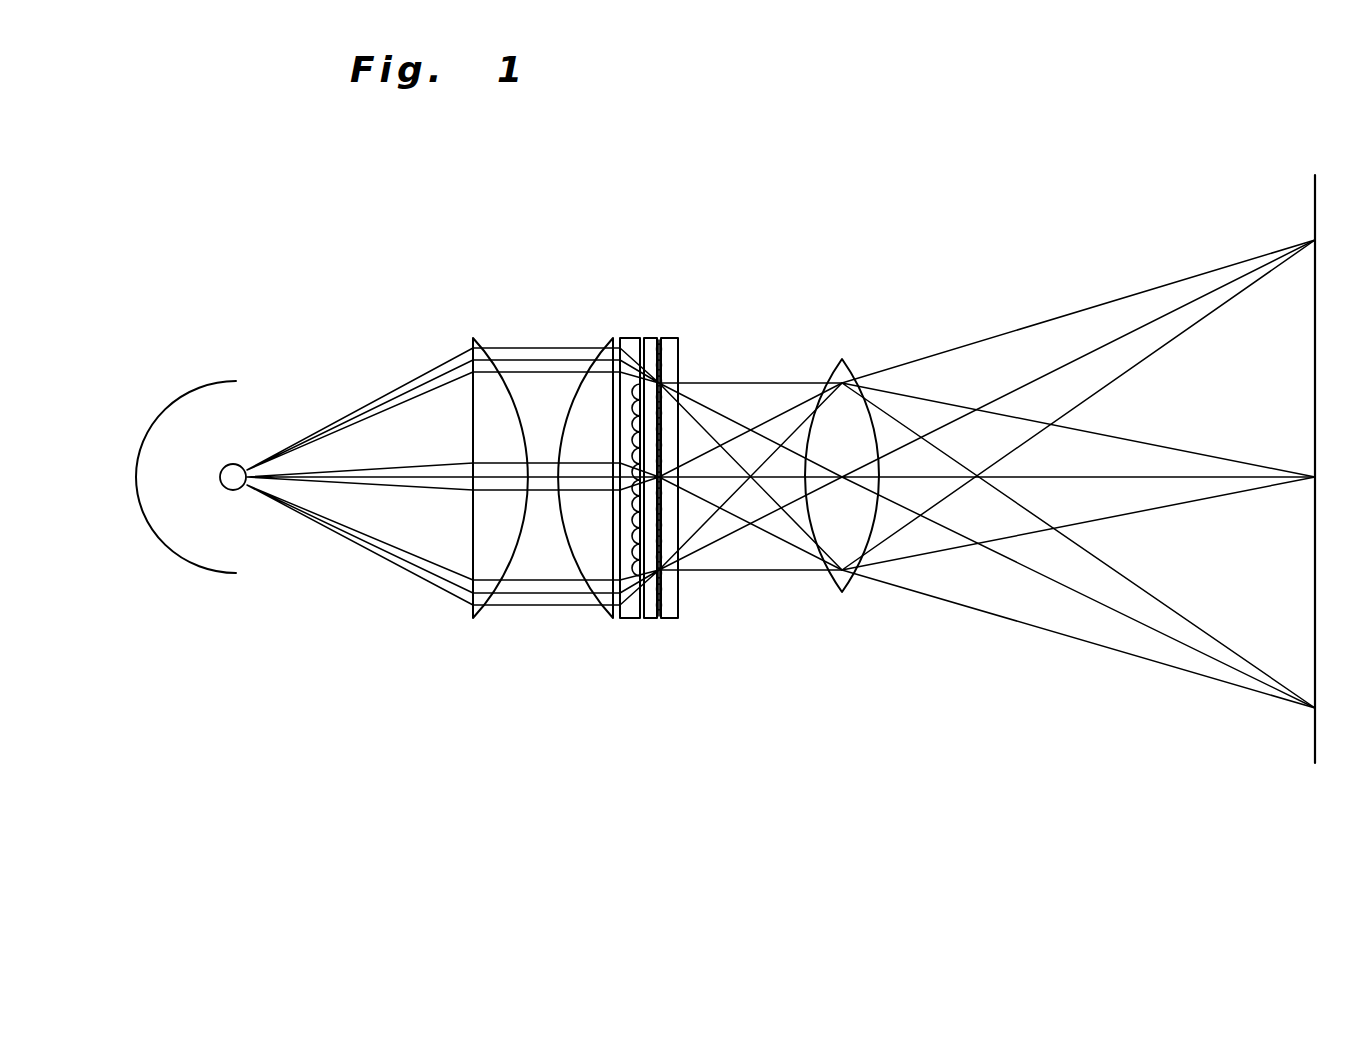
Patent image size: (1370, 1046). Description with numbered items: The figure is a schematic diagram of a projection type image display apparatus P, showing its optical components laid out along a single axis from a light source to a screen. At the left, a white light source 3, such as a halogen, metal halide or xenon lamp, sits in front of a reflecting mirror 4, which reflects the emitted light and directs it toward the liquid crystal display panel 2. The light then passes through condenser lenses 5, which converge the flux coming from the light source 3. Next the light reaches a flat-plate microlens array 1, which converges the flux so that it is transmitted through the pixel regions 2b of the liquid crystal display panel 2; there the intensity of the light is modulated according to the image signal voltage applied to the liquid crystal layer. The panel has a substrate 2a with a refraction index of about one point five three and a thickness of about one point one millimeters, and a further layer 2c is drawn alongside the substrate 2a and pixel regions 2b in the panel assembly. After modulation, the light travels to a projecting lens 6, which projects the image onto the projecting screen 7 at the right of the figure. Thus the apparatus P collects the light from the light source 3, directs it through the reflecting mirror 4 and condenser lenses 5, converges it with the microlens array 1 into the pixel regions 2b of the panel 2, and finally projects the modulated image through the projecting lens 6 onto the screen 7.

The flat-plate microlens array 1 is at (627, 620).
The liquid crystal display panel 2 is at (686, 619).
The substrate 2a is at (668, 338).
The pixel region 2b is at (680, 372).
The transparent plate 2c is at (672, 372).
The white light source 3 is at (240, 492).
The reflecting mirror 4 is at (213, 572).
The condenser lenses 5 is at (476, 338).
The projecting lens 6 is at (842, 594).
The projecting screen 7 is at (1315, 763).
The image display apparatus P is at (988, 228).